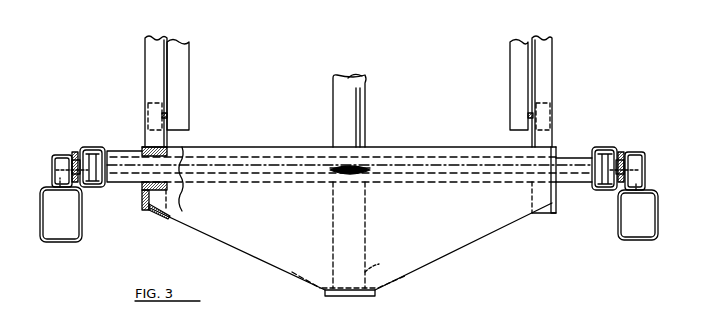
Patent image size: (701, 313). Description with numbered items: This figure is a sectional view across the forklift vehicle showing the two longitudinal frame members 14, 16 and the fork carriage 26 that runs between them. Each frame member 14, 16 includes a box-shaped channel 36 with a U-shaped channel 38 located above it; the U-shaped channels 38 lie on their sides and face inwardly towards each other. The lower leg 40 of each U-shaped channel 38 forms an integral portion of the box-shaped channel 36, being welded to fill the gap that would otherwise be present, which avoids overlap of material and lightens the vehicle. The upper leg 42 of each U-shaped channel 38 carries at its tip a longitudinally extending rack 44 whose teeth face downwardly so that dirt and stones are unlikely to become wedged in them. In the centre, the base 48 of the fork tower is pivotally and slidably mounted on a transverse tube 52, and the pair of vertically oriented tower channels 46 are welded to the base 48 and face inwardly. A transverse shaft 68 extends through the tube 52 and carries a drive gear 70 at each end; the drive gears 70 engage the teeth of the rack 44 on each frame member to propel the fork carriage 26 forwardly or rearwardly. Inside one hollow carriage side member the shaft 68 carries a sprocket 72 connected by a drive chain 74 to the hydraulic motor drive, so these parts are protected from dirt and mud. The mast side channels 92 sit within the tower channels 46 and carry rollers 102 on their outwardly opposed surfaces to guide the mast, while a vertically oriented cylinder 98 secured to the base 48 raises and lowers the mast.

The longitudinal frame member 14 is at (84, 215).
The longitudinal frame member 16 is at (616, 225).
The fork carriage 26 is at (100, 145).
The box-shaped channel 36 is at (72, 243).
The U-shaped channel 38 is at (46, 158).
The lower leg 40 is at (62, 192).
The upper leg 42 is at (61, 153).
The rack 44 is at (75, 151).
The channel 46 is at (152, 52).
The base 48 is at (465, 250).
The transverse tube 52 is at (577, 158).
The transverse shaft 68 is at (488, 172).
The drive gear 70 is at (74, 184).
The sprocket 72 is at (99, 161).
The drive chain 74 is at (103, 188).
The side channel 92 is at (182, 58).
The cylinder 98 is at (366, 100).
The rollers 102 is at (150, 103).